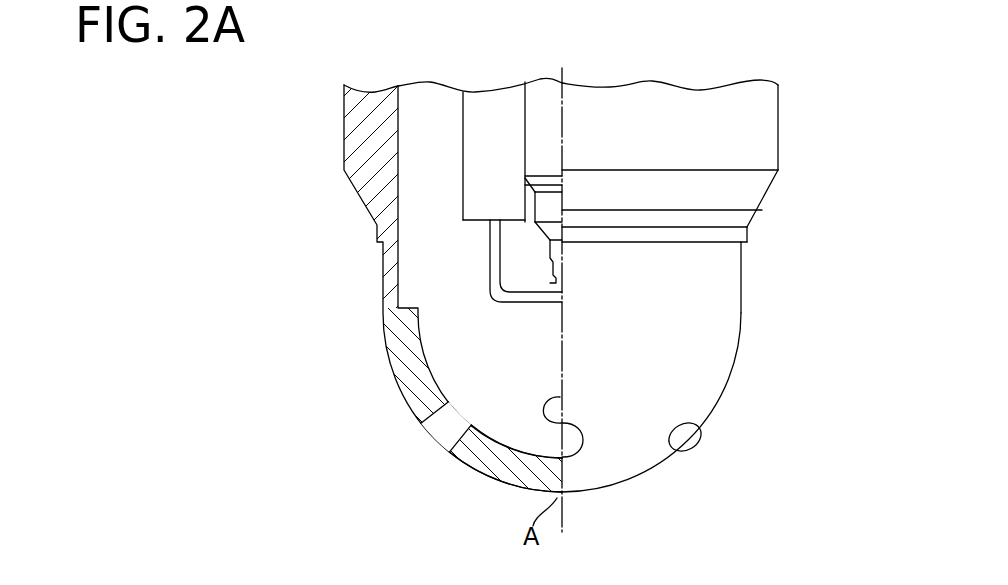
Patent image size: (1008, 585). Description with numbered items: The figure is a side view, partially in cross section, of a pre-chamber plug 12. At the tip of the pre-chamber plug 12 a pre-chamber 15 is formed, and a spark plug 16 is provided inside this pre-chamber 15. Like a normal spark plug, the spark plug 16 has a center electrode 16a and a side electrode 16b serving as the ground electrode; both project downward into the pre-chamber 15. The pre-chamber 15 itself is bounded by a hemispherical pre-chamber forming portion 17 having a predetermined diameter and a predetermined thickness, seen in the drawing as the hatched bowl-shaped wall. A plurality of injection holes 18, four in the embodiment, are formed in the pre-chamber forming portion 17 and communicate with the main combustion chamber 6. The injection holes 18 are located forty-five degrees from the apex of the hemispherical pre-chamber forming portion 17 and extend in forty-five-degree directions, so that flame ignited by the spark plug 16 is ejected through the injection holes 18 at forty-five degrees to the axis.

The pre-chamber plug 12 is at (786, 59).
The pre-chamber 15 is at (437, 345).
The main combustion chamber 6 is at (425, 322).
The spark plug 16 is at (546, 70).
The center electrode 16a is at (561, 290).
The side electrode 16b is at (525, 305).
The pre-chamber forming portion 17 is at (478, 471).
The injection holes 18 is at (430, 425).